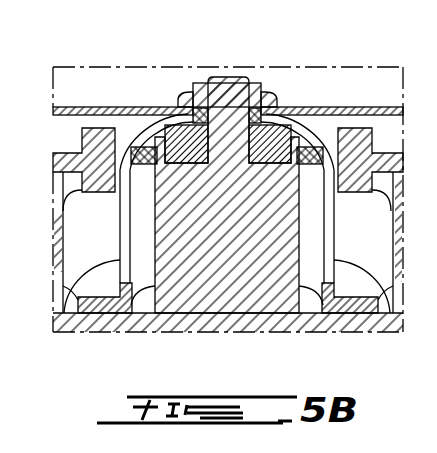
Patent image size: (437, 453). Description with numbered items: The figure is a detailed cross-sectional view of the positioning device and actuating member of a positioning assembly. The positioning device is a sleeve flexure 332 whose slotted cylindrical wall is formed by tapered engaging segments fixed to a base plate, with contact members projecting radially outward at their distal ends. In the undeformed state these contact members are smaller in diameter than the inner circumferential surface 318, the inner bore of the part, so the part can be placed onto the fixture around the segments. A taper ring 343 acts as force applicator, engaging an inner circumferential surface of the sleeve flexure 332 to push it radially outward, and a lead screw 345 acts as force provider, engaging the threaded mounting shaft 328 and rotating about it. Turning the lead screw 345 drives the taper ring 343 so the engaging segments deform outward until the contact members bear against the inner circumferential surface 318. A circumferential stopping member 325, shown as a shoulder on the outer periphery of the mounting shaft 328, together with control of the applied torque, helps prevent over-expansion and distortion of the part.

The threaded mounting shaft 328 is at (225, 118).
The inner circumferential surface 318 is at (338, 150).
The sleeve flexure 332 is at (122, 203).
The taper ring 343 is at (158, 146).
The lead screw 345 is at (179, 128).
The circumferential stopping member 325 is at (298, 177).